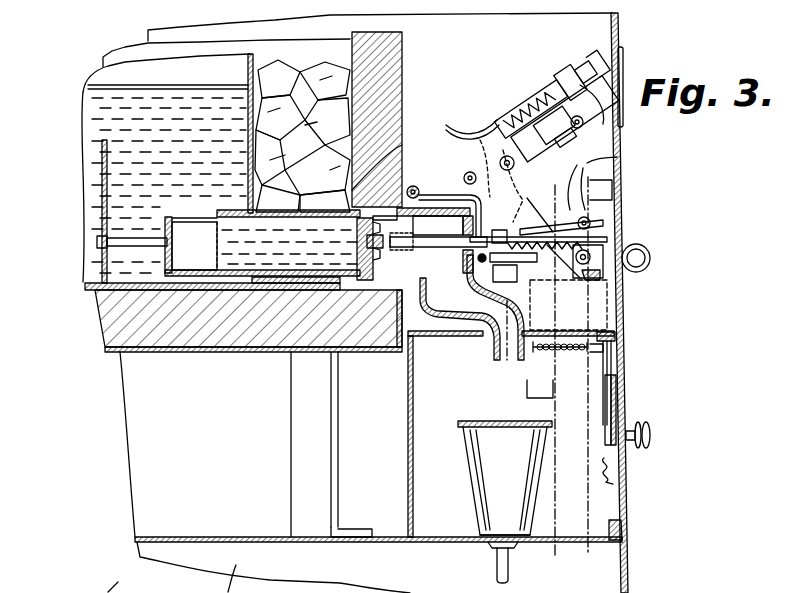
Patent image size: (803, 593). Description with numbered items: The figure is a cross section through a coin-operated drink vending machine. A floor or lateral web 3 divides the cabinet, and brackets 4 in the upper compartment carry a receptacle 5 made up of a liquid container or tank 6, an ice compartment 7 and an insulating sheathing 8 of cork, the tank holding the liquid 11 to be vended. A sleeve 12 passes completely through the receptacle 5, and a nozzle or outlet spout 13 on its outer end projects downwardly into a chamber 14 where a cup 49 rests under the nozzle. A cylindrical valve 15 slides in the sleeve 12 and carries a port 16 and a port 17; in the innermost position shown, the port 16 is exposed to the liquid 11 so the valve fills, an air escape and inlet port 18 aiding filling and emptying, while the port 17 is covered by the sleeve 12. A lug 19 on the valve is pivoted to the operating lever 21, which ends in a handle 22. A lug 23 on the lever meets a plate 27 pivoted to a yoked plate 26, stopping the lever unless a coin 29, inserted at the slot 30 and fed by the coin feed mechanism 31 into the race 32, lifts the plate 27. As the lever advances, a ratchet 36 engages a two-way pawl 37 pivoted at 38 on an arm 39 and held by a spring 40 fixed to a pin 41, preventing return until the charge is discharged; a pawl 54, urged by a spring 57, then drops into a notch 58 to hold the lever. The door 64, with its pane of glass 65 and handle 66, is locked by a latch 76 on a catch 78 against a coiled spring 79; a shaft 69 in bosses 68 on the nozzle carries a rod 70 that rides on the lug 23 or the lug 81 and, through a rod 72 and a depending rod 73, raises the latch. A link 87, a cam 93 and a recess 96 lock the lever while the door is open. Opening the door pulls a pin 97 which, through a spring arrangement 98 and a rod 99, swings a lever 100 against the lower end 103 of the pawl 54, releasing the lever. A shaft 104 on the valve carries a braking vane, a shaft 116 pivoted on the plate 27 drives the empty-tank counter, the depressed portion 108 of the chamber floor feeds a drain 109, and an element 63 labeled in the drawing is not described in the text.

The floor or lateral web 3 is at (258, 542).
The brackets 4 is at (291, 430).
The receptacle 5 is at (402, 62).
The liquid container or tank 6 is at (256, 68).
The ice compartment 7 is at (350, 50).
The insulating sheathing 8 is at (380, 34).
The liquid 11 is at (193, 97).
The sleeve 12 is at (227, 279).
The nozzle or outlet spout 13 is at (433, 323).
The chamber 14 is at (408, 440).
The valve 15 is at (168, 217).
The port 16 is at (194, 218).
The port 17 is at (278, 350).
The air escape and inlet port 18 is at (403, 146).
The lug 19 is at (351, 444).
The operating lever 21 is at (440, 248).
The hook or handle portion 22 is at (625, 245).
The lug 23 is at (615, 212).
The yoked plate 26 is at (607, 222).
The plate 27 is at (553, 200).
The coin 29 is at (518, 263).
The slot 30 is at (624, 78).
The coin feed mechanism 31 is at (550, 113).
The race or slot 32 is at (588, 318).
The ratchet 36 is at (586, 302).
The two-way pawl 37 is at (650, 255).
The pivot 38 is at (655, 262).
The arm 39 is at (615, 266).
The spring 40 is at (605, 276).
The pin 41 is at (612, 280).
The cup 49 is at (478, 462).
The pawl 54 is at (417, 258).
The spring 57 is at (477, 292).
The notch 58 is at (393, 283).
The pivot 63 is at (466, 125).
The door 64 is at (627, 348).
The pane of glass 65 is at (628, 402).
The handle 66 is at (650, 436).
The bosses 68 is at (413, 190).
The shaft 69 is at (418, 188).
The rod 70 is at (455, 195).
The rod 72 is at (579, 177).
The rod 73 is at (615, 205).
The latch 76 is at (650, 430).
The hook or catch 78 is at (628, 415).
The coiled spring 79 is at (613, 468).
The lug 81 is at (417, 240).
The link 87 is at (627, 368).
The cam 93 is at (600, 388).
The recess 96 is at (615, 238).
The pin 97 is at (603, 355).
The spring arrangement 98 is at (558, 364).
The rod 99 is at (517, 310).
The lever 100 is at (568, 305).
The lower end of pawl 103 is at (102, 142).
The shaft 104 is at (123, 242).
The depressed portion 108 is at (490, 546).
The drain 109 is at (495, 575).
The shaft 116 is at (618, 157).